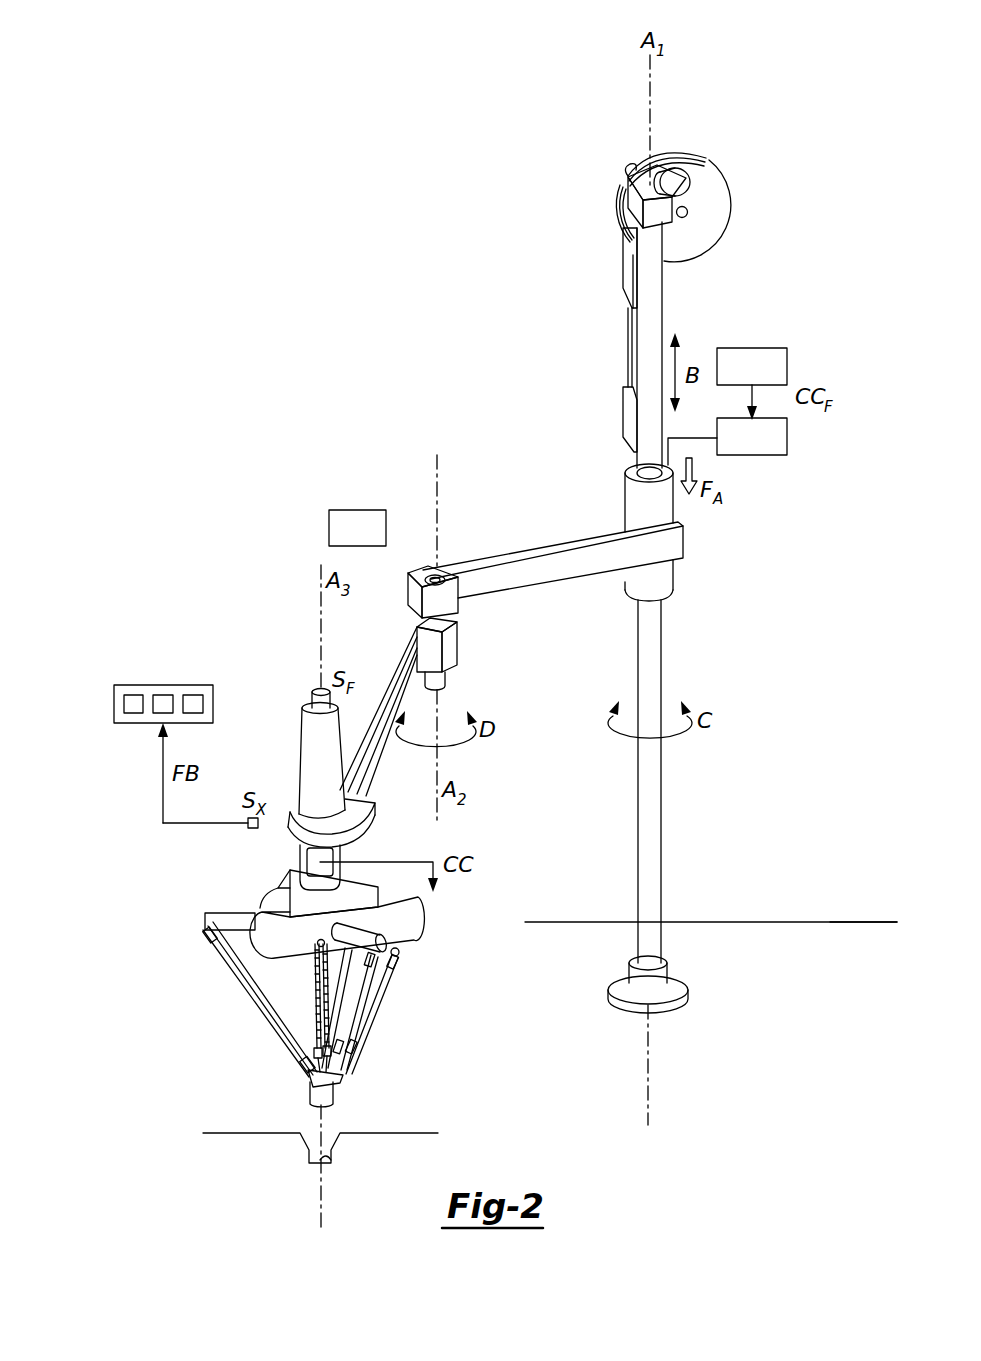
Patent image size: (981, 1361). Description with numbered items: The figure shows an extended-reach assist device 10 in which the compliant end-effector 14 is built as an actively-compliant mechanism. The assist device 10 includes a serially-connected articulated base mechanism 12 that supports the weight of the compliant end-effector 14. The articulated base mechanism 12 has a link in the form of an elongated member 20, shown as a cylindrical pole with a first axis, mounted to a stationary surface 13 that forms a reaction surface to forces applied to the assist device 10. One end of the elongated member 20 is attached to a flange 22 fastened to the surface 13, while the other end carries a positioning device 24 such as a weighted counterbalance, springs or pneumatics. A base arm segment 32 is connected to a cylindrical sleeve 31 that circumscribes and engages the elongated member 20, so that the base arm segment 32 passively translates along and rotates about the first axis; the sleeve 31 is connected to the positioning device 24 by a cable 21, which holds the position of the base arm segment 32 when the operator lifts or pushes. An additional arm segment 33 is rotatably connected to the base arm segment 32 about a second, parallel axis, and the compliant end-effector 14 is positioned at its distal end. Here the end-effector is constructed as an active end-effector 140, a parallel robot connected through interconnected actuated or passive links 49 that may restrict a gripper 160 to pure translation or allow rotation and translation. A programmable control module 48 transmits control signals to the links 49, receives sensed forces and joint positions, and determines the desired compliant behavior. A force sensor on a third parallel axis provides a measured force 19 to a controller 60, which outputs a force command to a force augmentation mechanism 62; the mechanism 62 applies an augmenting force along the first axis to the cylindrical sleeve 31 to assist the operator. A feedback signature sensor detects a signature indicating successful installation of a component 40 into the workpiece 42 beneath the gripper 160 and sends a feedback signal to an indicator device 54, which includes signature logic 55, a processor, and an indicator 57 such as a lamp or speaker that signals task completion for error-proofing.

The assist device 10 is at (745, 42).
The articulated base mechanism 12 is at (766, 884).
The stationary surface 13 is at (840, 954).
The compliant end-effector 14 is at (135, 912).
The measured force 19 is at (312, 698).
The elongated member 20 is at (648, 825).
The cable 21 is at (632, 336).
The flange 22 is at (678, 983).
The positioning device 24 is at (751, 145).
The cylindrical sleeve 31 is at (678, 577).
The base arm segment 32 is at (545, 578).
The additional arm segment 33 is at (379, 765).
The component 40 is at (310, 1094).
The workpiece 42 is at (328, 1163).
The programmable control module 48 is at (318, 862).
The actuated or passive links 49 is at (255, 1003).
The indicator device 54 is at (114, 707).
The signature logic 55 is at (134, 695).
The indicator 57 is at (193, 695).
The controller 60 is at (558, 447).
The force augmentation mechanism 62 is at (727, 441).
The active end-effector 140 is at (450, 915).
The gripper 160 is at (360, 1098).